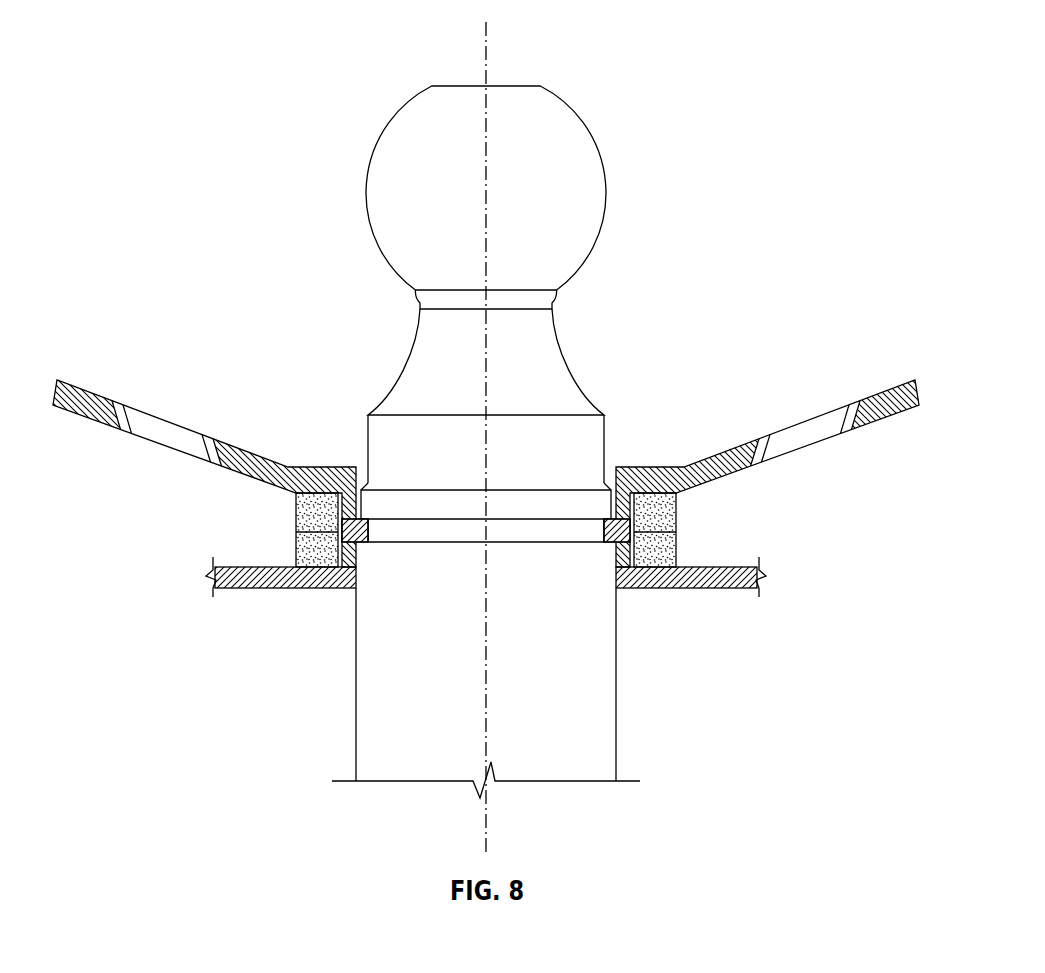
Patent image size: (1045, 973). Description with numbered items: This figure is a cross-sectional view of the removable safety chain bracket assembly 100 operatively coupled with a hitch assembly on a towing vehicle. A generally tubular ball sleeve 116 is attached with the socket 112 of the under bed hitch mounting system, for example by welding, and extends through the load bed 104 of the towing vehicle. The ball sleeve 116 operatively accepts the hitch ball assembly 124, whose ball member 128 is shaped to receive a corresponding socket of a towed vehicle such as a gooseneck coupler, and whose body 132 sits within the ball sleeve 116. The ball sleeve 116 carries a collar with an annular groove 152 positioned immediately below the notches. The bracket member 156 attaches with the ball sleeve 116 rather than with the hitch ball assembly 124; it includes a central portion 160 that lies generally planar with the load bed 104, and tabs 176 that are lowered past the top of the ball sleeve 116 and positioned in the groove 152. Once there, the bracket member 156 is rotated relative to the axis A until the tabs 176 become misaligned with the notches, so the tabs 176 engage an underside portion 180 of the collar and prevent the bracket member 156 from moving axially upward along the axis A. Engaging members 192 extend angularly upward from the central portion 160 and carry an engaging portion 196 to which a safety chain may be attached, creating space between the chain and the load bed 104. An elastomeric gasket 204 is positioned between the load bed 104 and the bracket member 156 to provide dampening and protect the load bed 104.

The removable safety chain bracket assembly 100 is at (717, 655).
The load bed 104 is at (238, 578).
The socket 112 is at (608, 475).
The ball sleeve 116 is at (600, 691).
The hitch ball assembly 124 is at (537, 197).
The ball member 128 is at (594, 223).
The body 132 is at (377, 452).
The annular groove 152 is at (575, 543).
The bracket member 156 is at (248, 451).
The central portion 160 is at (616, 468).
The tab 176 is at (352, 533).
The underside portion 180 is at (537, 522).
The engaging member 192 is at (92, 408).
The engaging portion 196 is at (150, 443).
The gasket 204 is at (300, 517).
The axis A is at (486, 57).